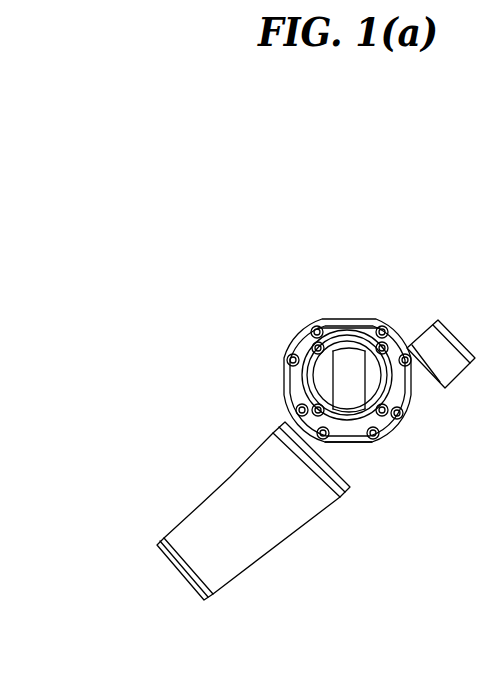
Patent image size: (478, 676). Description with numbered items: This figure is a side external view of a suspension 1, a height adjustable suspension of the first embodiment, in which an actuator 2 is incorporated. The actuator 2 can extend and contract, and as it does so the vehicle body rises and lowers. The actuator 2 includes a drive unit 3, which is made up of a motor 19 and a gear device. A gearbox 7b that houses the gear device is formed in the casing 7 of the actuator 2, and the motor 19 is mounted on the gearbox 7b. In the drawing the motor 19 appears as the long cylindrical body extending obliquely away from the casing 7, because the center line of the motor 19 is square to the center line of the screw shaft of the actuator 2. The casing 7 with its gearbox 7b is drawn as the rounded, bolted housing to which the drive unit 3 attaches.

The suspension 1 is at (318, 263).
The actuator 2 is at (388, 324).
The drive unit 3 is at (361, 486).
The casing 7 is at (376, 383).
The gearbox 7b is at (348, 447).
The motor 19 is at (263, 542).